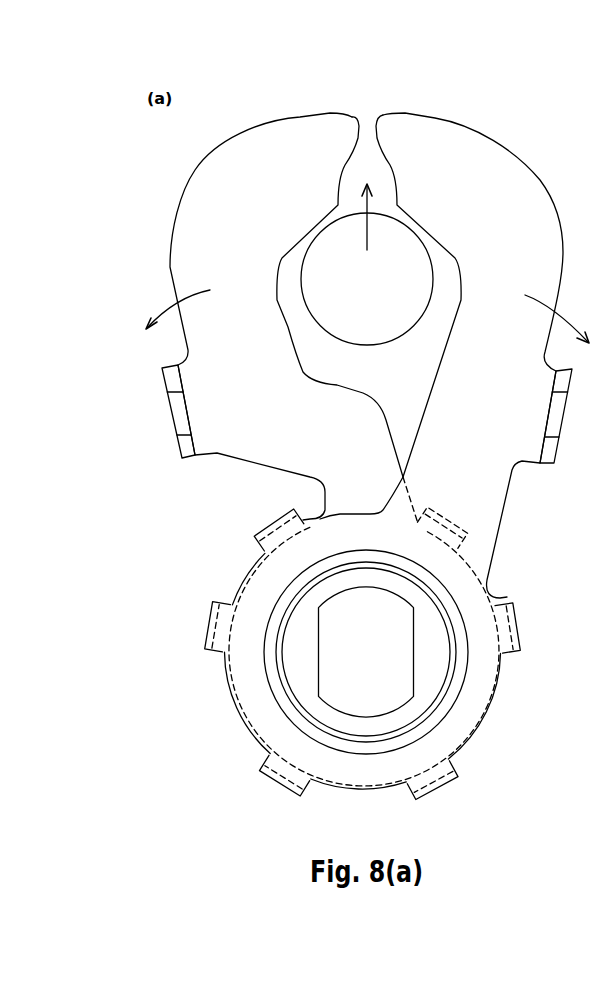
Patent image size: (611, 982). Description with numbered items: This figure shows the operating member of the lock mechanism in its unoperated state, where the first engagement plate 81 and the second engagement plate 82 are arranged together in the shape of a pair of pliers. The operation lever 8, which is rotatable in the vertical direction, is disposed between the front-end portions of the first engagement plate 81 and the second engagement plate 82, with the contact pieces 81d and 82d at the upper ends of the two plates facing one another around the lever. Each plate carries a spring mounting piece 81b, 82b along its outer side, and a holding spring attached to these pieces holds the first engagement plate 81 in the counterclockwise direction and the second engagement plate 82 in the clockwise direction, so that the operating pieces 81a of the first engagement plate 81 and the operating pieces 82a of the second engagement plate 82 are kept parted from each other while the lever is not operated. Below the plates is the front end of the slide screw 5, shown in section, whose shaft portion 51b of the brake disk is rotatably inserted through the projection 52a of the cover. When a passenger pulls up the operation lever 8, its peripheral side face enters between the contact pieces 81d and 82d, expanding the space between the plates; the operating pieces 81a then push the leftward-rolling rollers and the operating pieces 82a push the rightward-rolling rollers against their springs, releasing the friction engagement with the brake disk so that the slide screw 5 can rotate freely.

The screw 5 is at (371, 680).
The operation lever 8 is at (382, 317).
The shaft portion 51b is at (433, 679).
The projection 52a is at (447, 708).
The first engagement plate 81 is at (540, 263).
The operating pieces 81a is at (280, 525).
The spring mounting piece 81b is at (550, 430).
The contact piece 81d is at (384, 148).
The second engagement plate 82 is at (190, 262).
The operating pieces 82a is at (455, 514).
The spring mounting piece 82b is at (172, 401).
The contact piece 82d is at (350, 148).